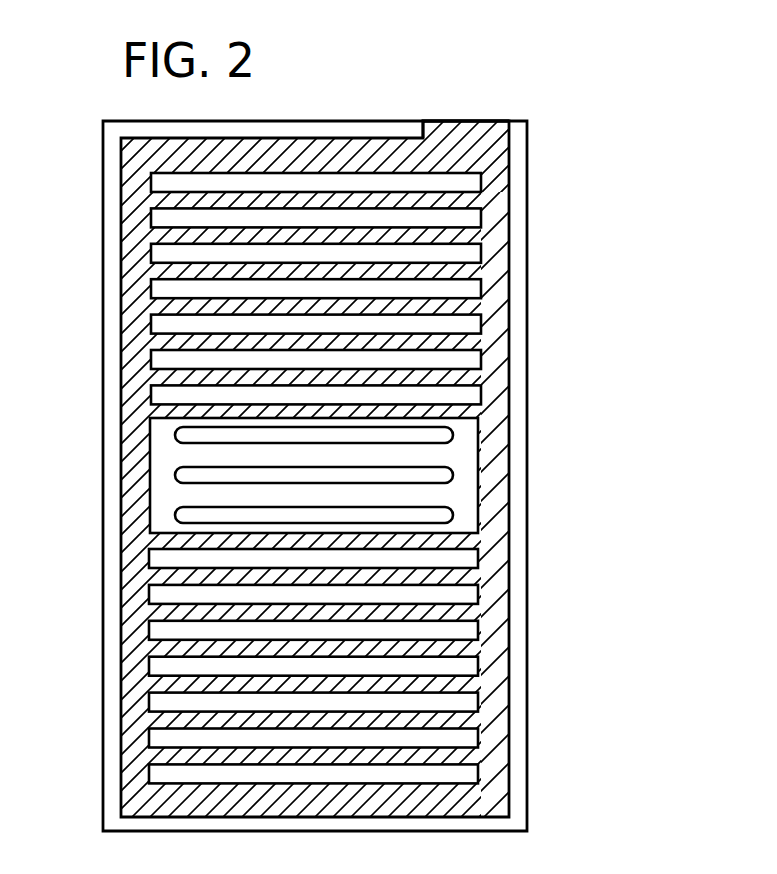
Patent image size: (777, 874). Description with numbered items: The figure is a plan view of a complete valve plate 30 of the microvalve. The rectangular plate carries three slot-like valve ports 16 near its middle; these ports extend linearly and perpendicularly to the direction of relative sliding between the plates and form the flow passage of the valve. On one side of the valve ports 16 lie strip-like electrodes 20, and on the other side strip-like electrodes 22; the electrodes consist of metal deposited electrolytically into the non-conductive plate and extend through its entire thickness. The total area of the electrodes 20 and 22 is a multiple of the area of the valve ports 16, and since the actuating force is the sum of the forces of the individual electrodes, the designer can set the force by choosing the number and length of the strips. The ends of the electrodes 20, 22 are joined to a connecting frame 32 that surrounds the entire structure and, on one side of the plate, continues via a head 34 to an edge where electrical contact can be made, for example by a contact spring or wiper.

The valve port 16 is at (455, 473).
The electrode 20 is at (453, 272).
The electrode 22 is at (452, 652).
The valve plate 30 is at (518, 348).
The connecting frame 32 is at (500, 703).
The head 34 is at (487, 128).